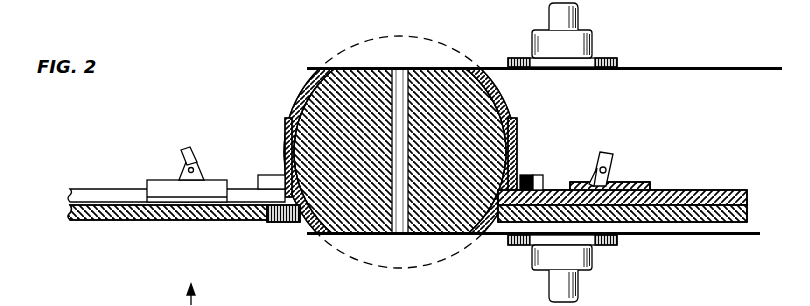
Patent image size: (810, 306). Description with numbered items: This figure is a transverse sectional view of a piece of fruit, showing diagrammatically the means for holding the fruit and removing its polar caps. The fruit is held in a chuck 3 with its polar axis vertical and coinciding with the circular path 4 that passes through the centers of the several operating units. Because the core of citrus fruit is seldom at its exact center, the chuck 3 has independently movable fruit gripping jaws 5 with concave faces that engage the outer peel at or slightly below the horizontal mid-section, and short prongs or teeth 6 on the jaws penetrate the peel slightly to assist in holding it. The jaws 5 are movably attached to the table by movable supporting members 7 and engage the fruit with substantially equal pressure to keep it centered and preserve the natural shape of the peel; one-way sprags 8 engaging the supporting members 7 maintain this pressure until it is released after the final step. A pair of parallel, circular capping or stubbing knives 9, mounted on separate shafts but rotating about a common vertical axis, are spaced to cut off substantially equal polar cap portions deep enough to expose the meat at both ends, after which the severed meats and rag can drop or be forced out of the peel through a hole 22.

The chuck 3 is at (527, 114).
The circular path 4 is at (698, 222).
The fruit gripping jaws 5 is at (285, 136).
The prongs or teeth 6 is at (508, 106).
The supporting members 7 is at (108, 189).
The sprags 8 is at (182, 153).
The capping or stubbing knives 9 is at (645, 68).
The hole 22 is at (287, 222).